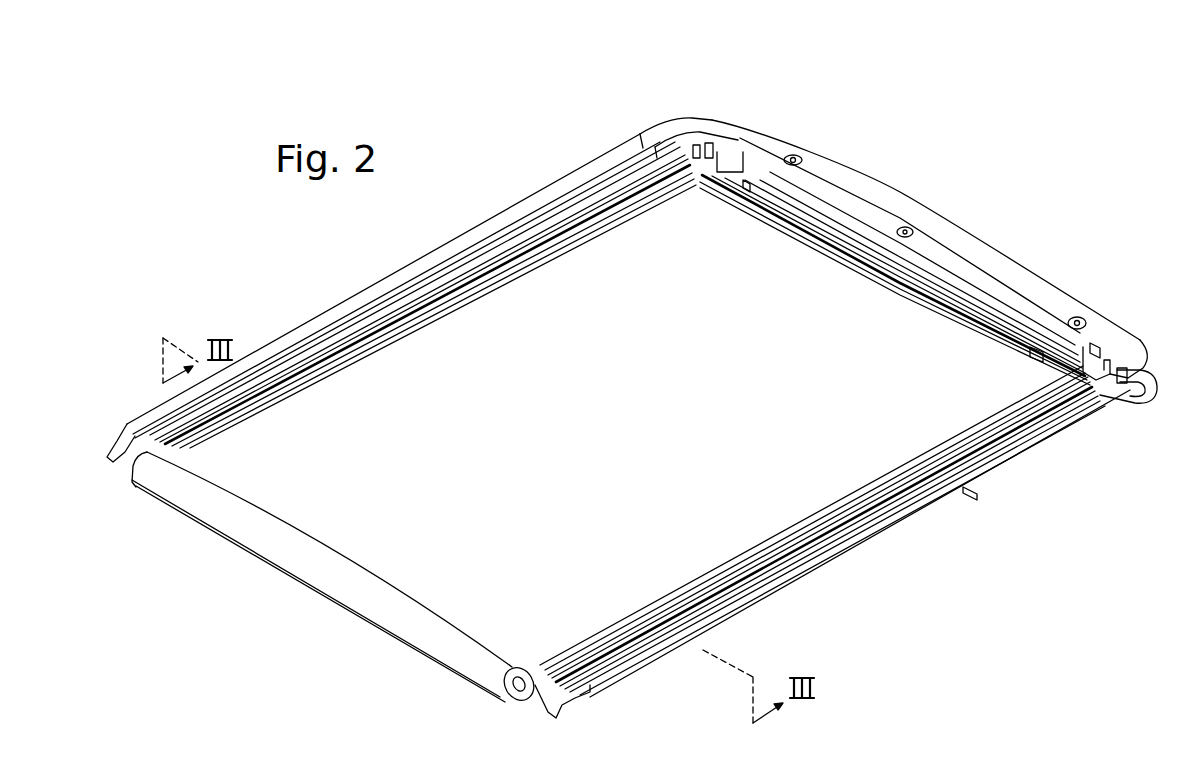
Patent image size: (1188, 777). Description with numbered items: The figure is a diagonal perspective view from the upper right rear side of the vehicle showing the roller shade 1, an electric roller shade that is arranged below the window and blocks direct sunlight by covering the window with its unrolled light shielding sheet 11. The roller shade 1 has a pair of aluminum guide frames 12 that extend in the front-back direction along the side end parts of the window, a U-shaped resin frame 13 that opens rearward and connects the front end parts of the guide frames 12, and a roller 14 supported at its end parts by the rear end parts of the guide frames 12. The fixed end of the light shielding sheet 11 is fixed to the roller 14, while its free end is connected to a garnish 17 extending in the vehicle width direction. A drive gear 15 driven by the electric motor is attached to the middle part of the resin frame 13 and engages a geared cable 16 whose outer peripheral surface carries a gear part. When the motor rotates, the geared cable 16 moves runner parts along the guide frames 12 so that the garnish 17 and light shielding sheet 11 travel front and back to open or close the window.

The roller shade 1 is at (950, 195).
The light shielding sheet 11 is at (705, 235).
The guide frame 12 is at (433, 262).
The resin frame 13 is at (1043, 277).
The roller 14 is at (437, 635).
The drive gear 15 is at (915, 262).
The geared cable 16 is at (880, 184).
The garnish 17 is at (1027, 333).